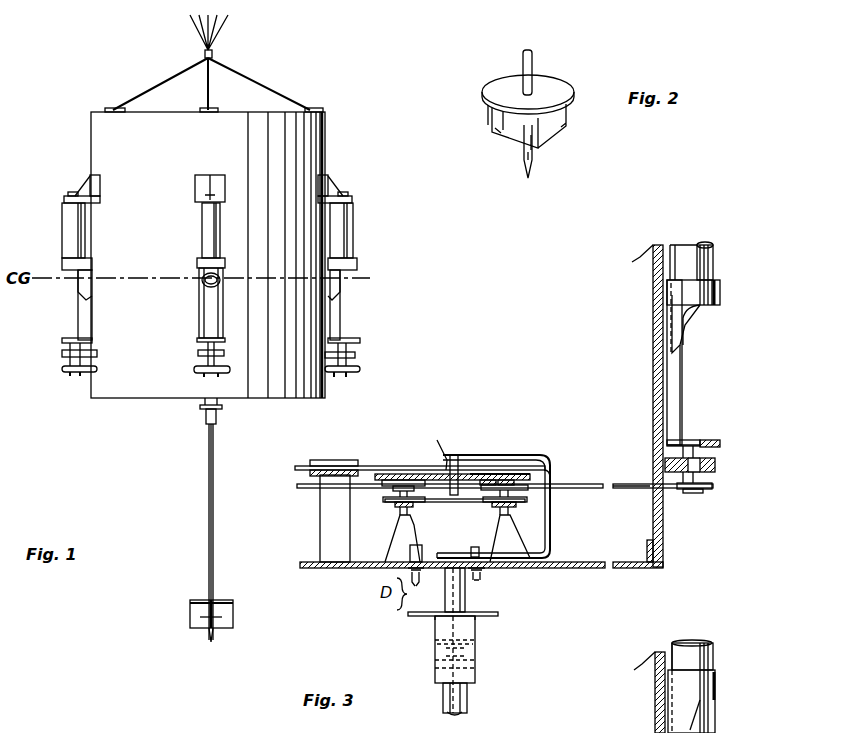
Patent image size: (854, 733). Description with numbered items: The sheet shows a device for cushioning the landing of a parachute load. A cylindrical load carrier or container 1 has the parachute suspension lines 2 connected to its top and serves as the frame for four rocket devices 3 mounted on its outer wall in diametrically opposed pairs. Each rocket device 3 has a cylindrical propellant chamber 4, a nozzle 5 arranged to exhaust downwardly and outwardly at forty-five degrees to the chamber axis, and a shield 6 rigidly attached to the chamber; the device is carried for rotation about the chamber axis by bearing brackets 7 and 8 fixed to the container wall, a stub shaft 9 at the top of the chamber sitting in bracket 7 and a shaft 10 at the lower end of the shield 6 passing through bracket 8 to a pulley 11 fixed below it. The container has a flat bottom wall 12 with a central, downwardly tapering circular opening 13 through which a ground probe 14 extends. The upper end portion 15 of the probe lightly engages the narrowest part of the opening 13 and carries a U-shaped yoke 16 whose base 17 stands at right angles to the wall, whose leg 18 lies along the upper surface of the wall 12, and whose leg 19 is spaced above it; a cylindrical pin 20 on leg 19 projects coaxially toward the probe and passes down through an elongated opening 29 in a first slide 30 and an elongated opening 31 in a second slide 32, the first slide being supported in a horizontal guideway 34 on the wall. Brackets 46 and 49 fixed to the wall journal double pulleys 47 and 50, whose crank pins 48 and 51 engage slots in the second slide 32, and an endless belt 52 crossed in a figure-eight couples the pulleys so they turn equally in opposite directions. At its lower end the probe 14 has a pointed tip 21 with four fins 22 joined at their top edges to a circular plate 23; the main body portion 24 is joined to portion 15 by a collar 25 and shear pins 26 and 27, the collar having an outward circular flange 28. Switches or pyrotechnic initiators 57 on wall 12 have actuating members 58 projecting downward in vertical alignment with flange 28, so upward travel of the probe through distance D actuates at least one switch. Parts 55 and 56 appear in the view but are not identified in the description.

In FIG. 1, the load carrier or container 1 is at (137, 396).
In FIG. 3, the load carrier or container 1 is at (668, 528).
In FIG. 1, the suspension lines 2 is at (222, 32).
In FIG. 1, the rocket devices 3 is at (62, 232).
In FIG. 3, the rocket devices 3 is at (712, 262).
In FIG. 1, the propellant chamber 4 is at (357, 262).
In FIG. 3, the propellant chamber 4 is at (705, 248).
In FIG. 1, the nozzle 5 is at (345, 285).
In FIG. 3, the nozzle 5 is at (695, 318).
In FIG. 1, the shield 6 is at (340, 313).
In FIG. 3, the shield 6 is at (680, 380).
In FIG. 1, the bearing bracket 7 is at (350, 199).
In FIG. 1, the bearing bracket 8 is at (355, 355).
In FIG. 3, the bearing bracket 8 is at (715, 466).
In FIG. 1, the stub shaft 9 is at (345, 193).
In FIG. 3, the stub shaft 9 is at (505, 486).
In FIG. 1, the shaft 10 is at (355, 343).
In FIG. 3, the shaft 10 is at (700, 447).
In FIG. 1, the pulley 11 is at (355, 372).
In FIG. 3, the pulley 11 is at (712, 488).
In FIG. 3, the bottom wall 12 is at (630, 568).
In FIG. 3, the circular opening 13 is at (462, 574).
In FIG. 1, the ground probe 14 is at (200, 485).
In FIG. 2, the ground probe 14 is at (545, 60).
In FIG. 3, the ground probe 14 is at (476, 708).
In FIG. 1, the upper end portion 15 is at (200, 410).
In FIG. 3, the upper end portion 15 is at (460, 605).
In FIG. 3, the U-shaped yoke 16 is at (562, 534).
In FIG. 3, the base of the yoke 17 is at (550, 548).
In FIG. 3, the leg 18 is at (535, 566).
In FIG. 3, the leg 19 is at (482, 455).
In FIG. 3, the cylindrical pin 20 is at (455, 455).
In FIG. 1, the pointed tip 21 is at (211, 642).
In FIG. 2, the pointed tip 21 is at (535, 170).
In FIG. 1, the fins 22 is at (195, 614).
In FIG. 2, the fins 22 is at (540, 138).
In FIG. 1, the circular plate 23 is at (200, 600).
In FIG. 2, the circular plate 23 is at (565, 87).
In FIG. 1, the main body portion 24 is at (208, 526).
In FIG. 3, the main body portion 24 is at (462, 692).
In FIG. 1, the collar 25 is at (207, 426).
In FIG. 3, the collar 25 is at (478, 656).
In FIG. 3, the shear pin 26 is at (433, 642).
In FIG. 3, the shear pin 27 is at (472, 664).
In FIG. 3, the circular flange 28 is at (482, 616).
In FIG. 3, the elongated opening 29 is at (444, 448).
In FIG. 3, the first slide 30 is at (368, 466).
In FIG. 3, the elongated opening 31 is at (437, 474).
In FIG. 3, the second slide 32 is at (500, 470).
In FIG. 3, the horizontal guideway 34 is at (335, 460).
In FIG. 3, the mounting bracket 46 is at (402, 538).
In FIG. 3, the double pulley 47 is at (392, 502).
In FIG. 3, the crank pin 48 is at (396, 480).
In FIG. 3, the bracket 49 is at (510, 538).
In FIG. 3, the double pulley 50 is at (512, 506).
In FIG. 3, the crank pin 51 is at (512, 480).
In FIG. 3, the endless belt 52 is at (470, 502).
In FIG. 3, the post 55 is at (332, 485).
In FIG. 3, the rod 56 is at (625, 486).
In FIG. 3, the switches or pyrotechnic initiators 57 is at (471, 550).
In FIG. 3, the actuating member 58 is at (418, 582).